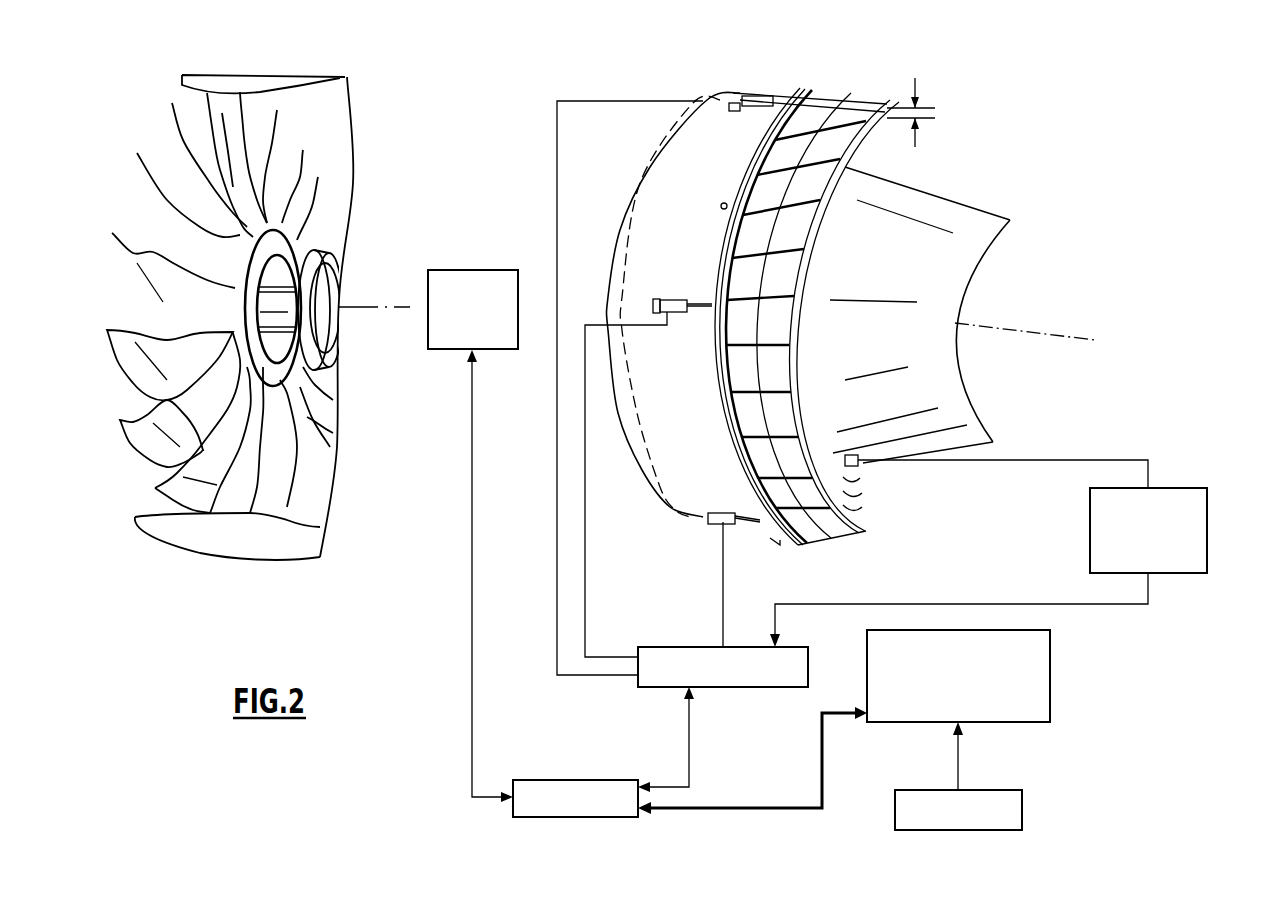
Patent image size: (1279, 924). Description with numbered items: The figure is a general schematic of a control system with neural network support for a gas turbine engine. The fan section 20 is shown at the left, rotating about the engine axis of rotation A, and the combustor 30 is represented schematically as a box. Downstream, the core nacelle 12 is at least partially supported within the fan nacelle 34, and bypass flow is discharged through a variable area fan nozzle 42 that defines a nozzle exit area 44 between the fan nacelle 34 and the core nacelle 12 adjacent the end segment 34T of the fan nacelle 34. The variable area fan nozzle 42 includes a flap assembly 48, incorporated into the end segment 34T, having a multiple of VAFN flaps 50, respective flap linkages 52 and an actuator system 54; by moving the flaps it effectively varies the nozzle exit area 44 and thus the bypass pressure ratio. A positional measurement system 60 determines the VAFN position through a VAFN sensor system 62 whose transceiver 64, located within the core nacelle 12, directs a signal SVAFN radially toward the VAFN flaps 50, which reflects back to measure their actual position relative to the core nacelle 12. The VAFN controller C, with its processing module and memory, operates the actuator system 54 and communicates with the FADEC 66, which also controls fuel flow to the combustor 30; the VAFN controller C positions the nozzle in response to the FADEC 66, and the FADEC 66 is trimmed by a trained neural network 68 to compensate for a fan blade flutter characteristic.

The core nacelle 12 is at (920, 315).
The fan section 20 is at (118, 250).
The combustor 30 is at (487, 322).
The fan nacelle 34 is at (735, 97).
The end segment 34T is at (890, 106).
The variable area fan nozzle 42 is at (851, 279).
The nozzle exit area 44 is at (938, 113).
The flap assembly 48 is at (800, 248).
The VAFN flaps 50 is at (779, 296).
The flap linkages 52 is at (716, 305).
The actuator system 54 is at (682, 324).
The positional measurement system 60 is at (1012, 520).
The VAFN sensor system 62 is at (1192, 488).
The transceiver 64 is at (858, 455).
The Full Authority Digital Engine Control (FADEC) 66 is at (597, 817).
The neural network 68 is at (1052, 680).
The engine axis of rotation A is at (378, 309).
The VAFN controller C is at (750, 688).
The signal Svafn SVAFN is at (867, 494).